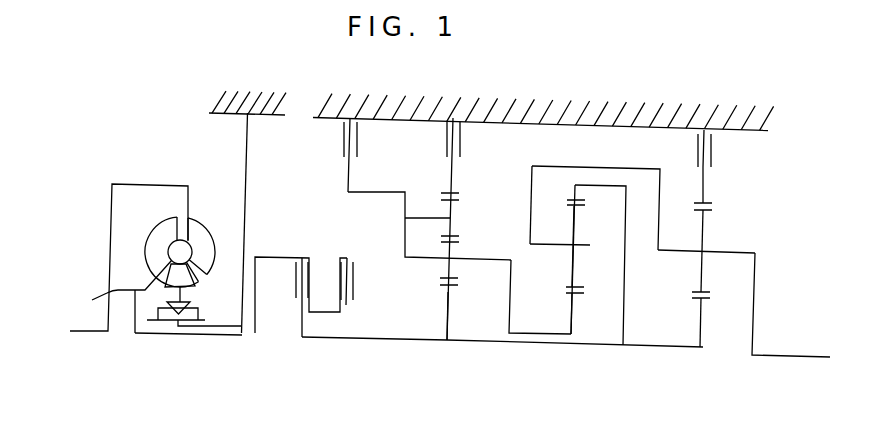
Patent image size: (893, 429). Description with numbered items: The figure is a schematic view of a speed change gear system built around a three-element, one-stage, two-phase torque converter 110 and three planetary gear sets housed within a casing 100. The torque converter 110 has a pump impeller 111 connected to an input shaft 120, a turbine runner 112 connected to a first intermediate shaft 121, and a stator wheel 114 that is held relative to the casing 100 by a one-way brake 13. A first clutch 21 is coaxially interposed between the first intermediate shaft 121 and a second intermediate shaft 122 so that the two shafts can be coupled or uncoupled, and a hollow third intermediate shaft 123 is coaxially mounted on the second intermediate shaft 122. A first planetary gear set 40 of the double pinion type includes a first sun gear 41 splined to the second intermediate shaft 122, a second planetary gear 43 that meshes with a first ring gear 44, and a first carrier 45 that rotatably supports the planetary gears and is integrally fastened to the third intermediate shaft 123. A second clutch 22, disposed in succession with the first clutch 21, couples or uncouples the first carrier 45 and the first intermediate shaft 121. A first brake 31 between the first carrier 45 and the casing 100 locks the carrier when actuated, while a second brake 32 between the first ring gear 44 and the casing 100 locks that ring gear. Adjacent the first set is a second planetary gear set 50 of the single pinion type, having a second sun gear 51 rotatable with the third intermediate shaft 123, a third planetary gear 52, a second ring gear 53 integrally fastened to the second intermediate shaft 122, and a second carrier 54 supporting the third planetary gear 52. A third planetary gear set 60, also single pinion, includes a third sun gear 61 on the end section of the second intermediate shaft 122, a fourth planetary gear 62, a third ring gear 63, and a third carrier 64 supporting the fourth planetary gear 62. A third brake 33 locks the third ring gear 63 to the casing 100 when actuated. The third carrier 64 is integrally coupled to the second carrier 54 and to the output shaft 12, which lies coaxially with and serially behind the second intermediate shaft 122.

The casing 100 is at (251, 110).
The output shaft 12 is at (775, 354).
The one-way brake 13 is at (198, 311).
The first clutch 21 is at (292, 297).
The second clutch 22 is at (349, 295).
The first brake 31 is at (350, 117).
The second brake 32 is at (453, 117).
The third brake 33 is at (703, 128).
The first planetary gear set 40 is at (443, 292).
The first sun gear 41 is at (447, 321).
The second planetary gear 43 is at (452, 229).
The first ring gear 44 is at (455, 168).
The first carrier 45 is at (418, 218).
The second planetary gear set 50 is at (562, 285).
The second sun gear 51 is at (575, 302).
The third planetary gear 52 is at (572, 263).
The second ring gear 53 is at (575, 192).
The second carrier 54 is at (543, 243).
The third planetary gear set 60 is at (697, 302).
The third sun gear 61 is at (702, 328).
The fourth planetary gear 62 is at (707, 229).
The third ring gear 63 is at (707, 177).
The third carrier 64 is at (673, 251).
The torque converter 110 is at (205, 219).
The pump impeller 111 is at (204, 242).
The turbine runner 112 is at (157, 243).
The stator wheel 114 is at (119, 285).
The input shaft 120 is at (85, 332).
The first intermediate shaft 121 is at (177, 336).
The second intermediate shaft 122 is at (340, 339).
The third intermediate shaft 123 is at (535, 334).